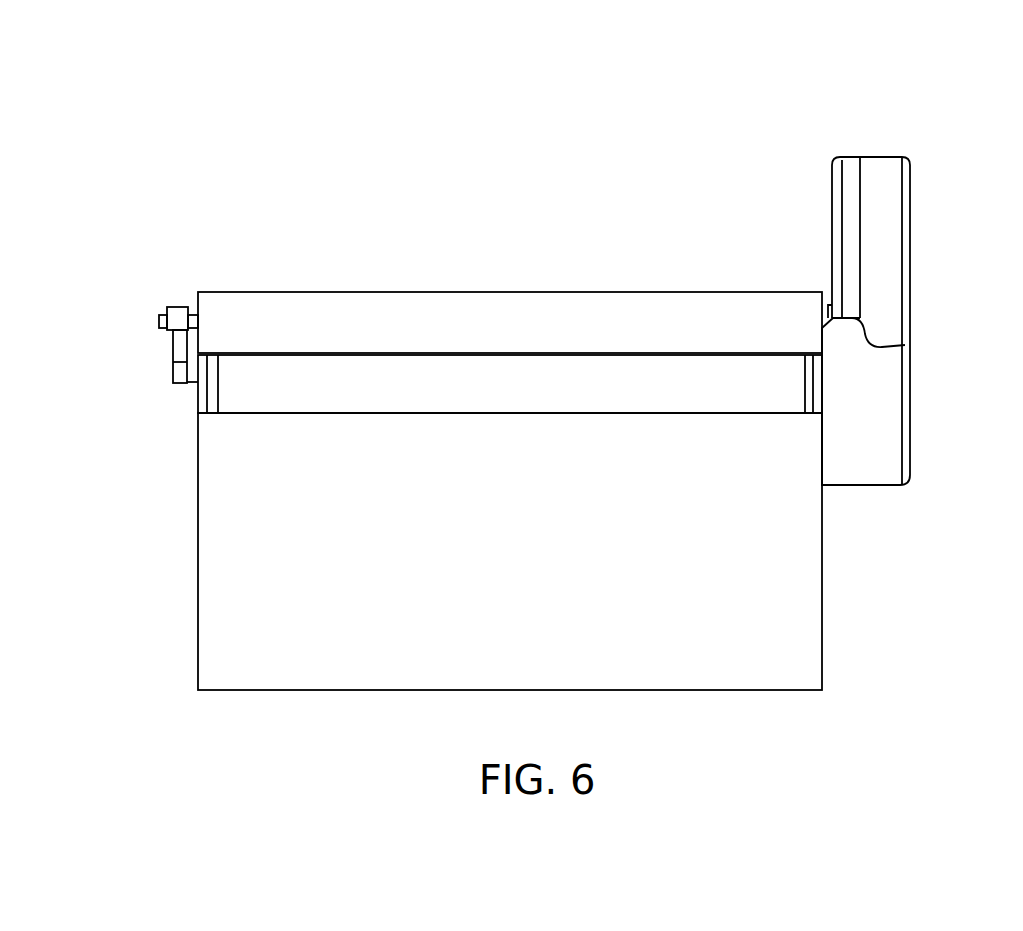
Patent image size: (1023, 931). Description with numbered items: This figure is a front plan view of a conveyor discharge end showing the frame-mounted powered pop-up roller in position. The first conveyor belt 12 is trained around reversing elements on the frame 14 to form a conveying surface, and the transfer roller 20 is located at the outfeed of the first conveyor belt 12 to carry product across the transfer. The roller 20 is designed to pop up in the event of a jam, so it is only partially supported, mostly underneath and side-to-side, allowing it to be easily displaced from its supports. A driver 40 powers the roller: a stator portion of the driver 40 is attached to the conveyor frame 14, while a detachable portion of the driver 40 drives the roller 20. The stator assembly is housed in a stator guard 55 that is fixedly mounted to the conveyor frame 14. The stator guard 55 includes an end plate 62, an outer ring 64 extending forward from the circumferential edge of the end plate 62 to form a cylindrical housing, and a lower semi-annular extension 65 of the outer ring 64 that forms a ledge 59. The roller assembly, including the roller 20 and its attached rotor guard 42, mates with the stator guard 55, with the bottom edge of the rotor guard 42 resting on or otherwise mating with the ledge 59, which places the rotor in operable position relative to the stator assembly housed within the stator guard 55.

The first conveyor belt 12 is at (567, 395).
The frame 14 is at (587, 522).
The transfer roller 20 is at (603, 307).
The driver 40 is at (897, 317).
The rotor guard 42 is at (848, 172).
The stator guard 55 is at (915, 225).
The ledge 59 is at (905, 345).
The end plate 62 is at (913, 420).
The outer ring 64 is at (865, 265).
The lower semi-annular extension 65 is at (833, 465).